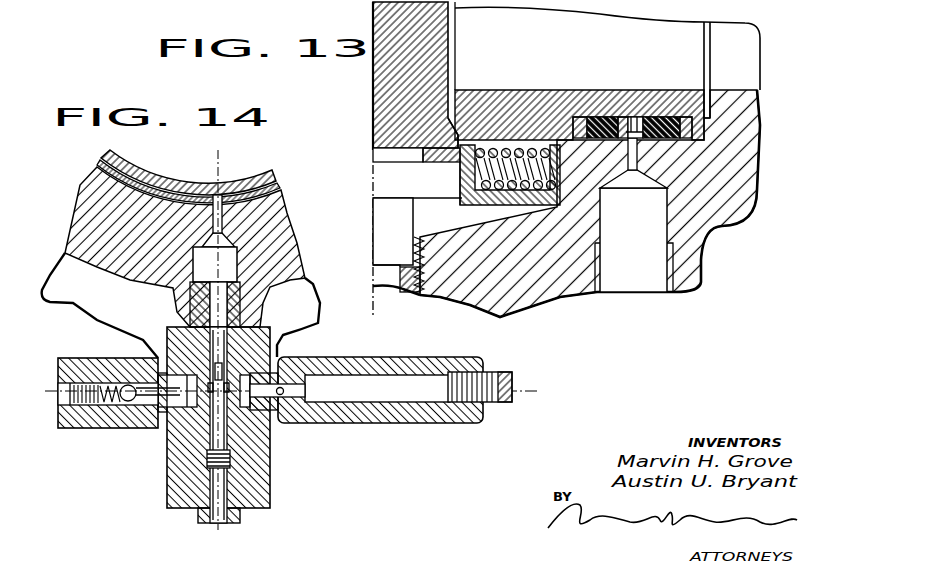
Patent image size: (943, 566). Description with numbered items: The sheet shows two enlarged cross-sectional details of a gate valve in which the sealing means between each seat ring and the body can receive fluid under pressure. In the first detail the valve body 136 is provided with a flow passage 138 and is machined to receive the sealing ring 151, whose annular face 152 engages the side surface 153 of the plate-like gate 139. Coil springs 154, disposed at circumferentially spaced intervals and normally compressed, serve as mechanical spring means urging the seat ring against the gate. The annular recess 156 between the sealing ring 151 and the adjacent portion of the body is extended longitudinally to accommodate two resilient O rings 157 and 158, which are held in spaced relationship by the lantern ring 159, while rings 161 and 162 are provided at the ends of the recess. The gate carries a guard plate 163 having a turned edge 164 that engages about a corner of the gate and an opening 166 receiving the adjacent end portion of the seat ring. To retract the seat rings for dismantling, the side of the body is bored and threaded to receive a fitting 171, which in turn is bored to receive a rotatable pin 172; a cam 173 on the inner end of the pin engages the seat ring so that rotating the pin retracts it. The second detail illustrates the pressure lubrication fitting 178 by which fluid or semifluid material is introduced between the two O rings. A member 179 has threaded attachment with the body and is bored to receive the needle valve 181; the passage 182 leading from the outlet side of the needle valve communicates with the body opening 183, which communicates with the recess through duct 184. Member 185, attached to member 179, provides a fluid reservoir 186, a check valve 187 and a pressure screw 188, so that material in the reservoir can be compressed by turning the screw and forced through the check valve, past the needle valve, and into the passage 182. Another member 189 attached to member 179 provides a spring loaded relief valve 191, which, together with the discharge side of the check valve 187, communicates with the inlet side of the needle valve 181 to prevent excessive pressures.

In FIG. 13, the valve body 136 is at (747, 153).
In FIG. 14, the valve body 136 is at (83, 202).
In FIG. 13, the flow passage 138 is at (727, 33).
In FIG. 13, the plate-like gate 139 is at (438, 28).
In FIG. 13, the sealing ring 151 is at (497, 103).
In FIG. 14, the sealing ring 151 is at (163, 178).
In FIG. 13, the annular face 152 is at (430, 132).
In FIG. 13, the side surface 153 is at (453, 47).
In FIG. 13, the coil spring 154 is at (513, 147).
In FIG. 13, the annular recess 156 is at (637, 117).
In FIG. 13, the resilient O ring 157 is at (598, 117).
In FIG. 13, the resilient O ring 158 is at (670, 115).
In FIG. 13, the lantern ring 159 is at (622, 117).
In FIG. 14, the lantern ring 159 is at (138, 187).
In FIG. 13, the ring 161 is at (578, 117).
In FIG. 13, the ring 162 is at (700, 130).
In FIG. 13, the guard plate 163 is at (452, 166).
In FIG. 13, the turned edge 164 is at (446, 152).
In FIG. 13, the opening 166 is at (457, 130).
In FIG. 13, the fitting 171 is at (403, 289).
In FIG. 13, the rotatable pin 172 is at (383, 217).
In FIG. 13, the cam 173 is at (380, 170).
In FIG. 14, the fitting 178 is at (277, 456).
In FIG. 14, the member 179 is at (210, 440).
In FIG. 14, the needle valve 181 is at (218, 452).
In FIG. 14, the passage 182 is at (223, 347).
In FIG. 13, the body opening 183 is at (650, 222).
In FIG. 14, the body opening 183 is at (203, 267).
In FIG. 13, the duct 184 is at (632, 162).
In FIG. 14, the duct 184 is at (220, 220).
In FIG. 14, the member 185 is at (358, 407).
In FIG. 14, the fluid reservoir 186 is at (368, 383).
In FIG. 14, the check valve 187 is at (283, 396).
In FIG. 14, the pressure screw 188 is at (498, 402).
In FIG. 14, the member 189 is at (90, 420).
In FIG. 14, the spring loaded relief valve 191 is at (130, 387).